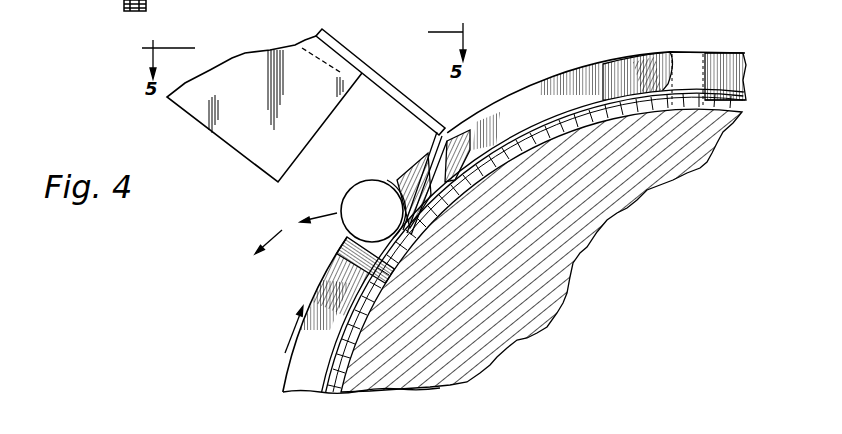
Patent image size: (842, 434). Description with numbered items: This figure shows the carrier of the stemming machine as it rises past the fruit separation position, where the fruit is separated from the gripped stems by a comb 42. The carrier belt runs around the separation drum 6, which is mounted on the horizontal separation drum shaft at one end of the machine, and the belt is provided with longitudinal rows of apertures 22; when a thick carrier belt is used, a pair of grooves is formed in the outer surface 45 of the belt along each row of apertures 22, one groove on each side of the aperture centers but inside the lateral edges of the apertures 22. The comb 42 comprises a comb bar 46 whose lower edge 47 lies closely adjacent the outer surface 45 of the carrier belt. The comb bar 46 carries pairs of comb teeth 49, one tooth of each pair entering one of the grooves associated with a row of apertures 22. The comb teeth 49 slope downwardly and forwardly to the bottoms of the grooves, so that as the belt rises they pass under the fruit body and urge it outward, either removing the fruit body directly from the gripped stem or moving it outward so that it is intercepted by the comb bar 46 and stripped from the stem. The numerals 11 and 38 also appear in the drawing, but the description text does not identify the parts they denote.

The separation drum 6 is at (665, 172).
The bead ring 11 is at (568, 117).
The apertures 22 is at (712, 63).
The segment 38 is at (666, 90).
The comb 42 is at (397, 240).
The outer surface 45 is at (527, 88).
The comb bar 46 is at (409, 107).
The lower edge 47 is at (454, 136).
The comb teeth 49 is at (431, 163).